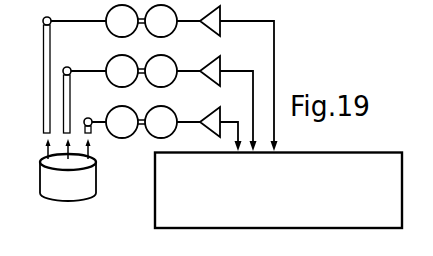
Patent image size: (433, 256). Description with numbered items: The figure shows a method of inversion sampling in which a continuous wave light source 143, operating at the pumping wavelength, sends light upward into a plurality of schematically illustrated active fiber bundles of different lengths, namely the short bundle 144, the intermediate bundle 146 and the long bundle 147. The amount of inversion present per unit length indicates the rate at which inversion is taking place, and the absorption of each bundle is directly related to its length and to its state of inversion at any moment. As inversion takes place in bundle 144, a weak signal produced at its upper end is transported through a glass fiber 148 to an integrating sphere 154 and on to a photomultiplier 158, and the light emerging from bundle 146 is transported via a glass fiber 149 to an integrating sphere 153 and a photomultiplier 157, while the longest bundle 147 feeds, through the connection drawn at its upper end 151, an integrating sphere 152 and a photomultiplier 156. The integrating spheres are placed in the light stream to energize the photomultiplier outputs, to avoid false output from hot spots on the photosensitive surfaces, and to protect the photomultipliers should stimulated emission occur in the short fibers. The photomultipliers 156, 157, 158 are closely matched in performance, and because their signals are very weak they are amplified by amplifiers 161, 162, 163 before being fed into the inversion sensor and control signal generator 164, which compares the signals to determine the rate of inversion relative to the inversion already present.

The continuous wave light source 143 is at (90, 182).
The active fiber bundle 144 is at (92, 132).
The active fiber bundle 146 is at (68, 100).
The active fiber bundle 147 is at (46, 82).
The glass fiber 148 is at (95, 113).
The glass fiber 149 is at (78, 56).
The terminal of long electrode 151 is at (50, 18).
The integrating sphere 152 is at (129, 30).
The integrating sphere 153 is at (129, 80).
The integrating sphere 154 is at (129, 131).
The photomultiplier 156 is at (168, 30).
The photomultiplier 157 is at (168, 80).
The photomultiplier 158 is at (168, 131).
The amplifier 161 is at (217, 13).
The amplifier 162 is at (217, 62).
The amplifier 163 is at (219, 115).
The inversion sensor and control signal generator 164 is at (155, 218).